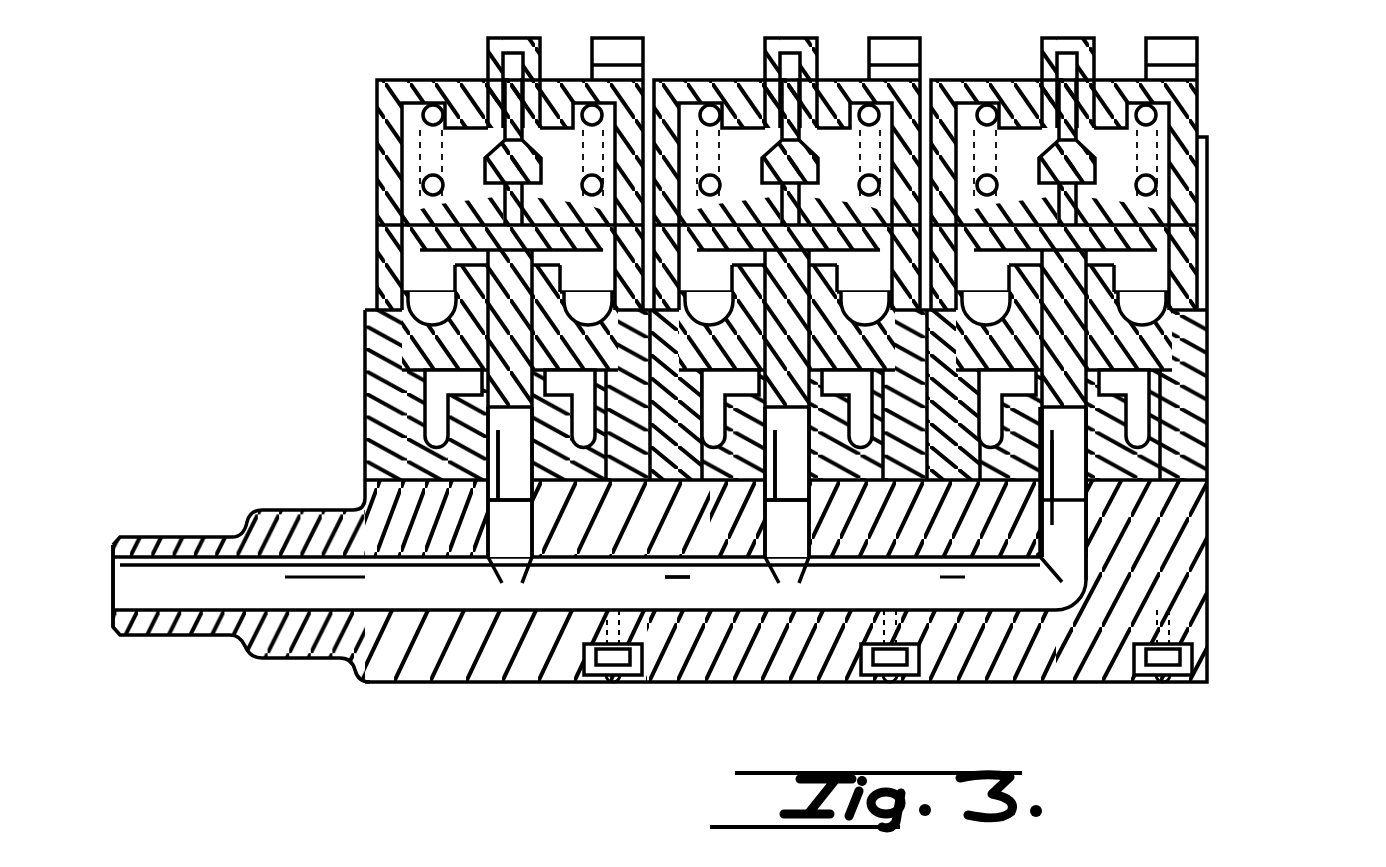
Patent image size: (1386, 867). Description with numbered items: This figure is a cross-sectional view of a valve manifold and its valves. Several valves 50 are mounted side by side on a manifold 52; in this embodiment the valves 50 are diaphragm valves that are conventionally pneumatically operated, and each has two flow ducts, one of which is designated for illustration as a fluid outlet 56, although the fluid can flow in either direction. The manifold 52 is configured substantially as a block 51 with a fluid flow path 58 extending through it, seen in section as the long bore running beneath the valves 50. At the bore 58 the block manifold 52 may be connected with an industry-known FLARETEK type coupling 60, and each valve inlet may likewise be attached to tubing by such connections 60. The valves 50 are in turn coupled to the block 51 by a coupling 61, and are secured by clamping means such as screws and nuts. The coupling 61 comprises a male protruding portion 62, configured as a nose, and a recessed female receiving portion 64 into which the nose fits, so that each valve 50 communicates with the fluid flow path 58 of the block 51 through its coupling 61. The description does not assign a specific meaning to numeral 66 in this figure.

The valves 50 is at (422, 80).
The block 51 is at (1207, 655).
The manifold 52 is at (1262, 252).
The fluid outlet 56 is at (1070, 465).
The fluid flow path 58 is at (240, 592).
The FLARETEK type coupling 60 is at (113, 540).
The coupling 61 is at (742, 510).
The male protruding portion 62 is at (820, 492).
The female receiving portion 64 is at (538, 492).
The nozzle bore 66 is at (505, 462).